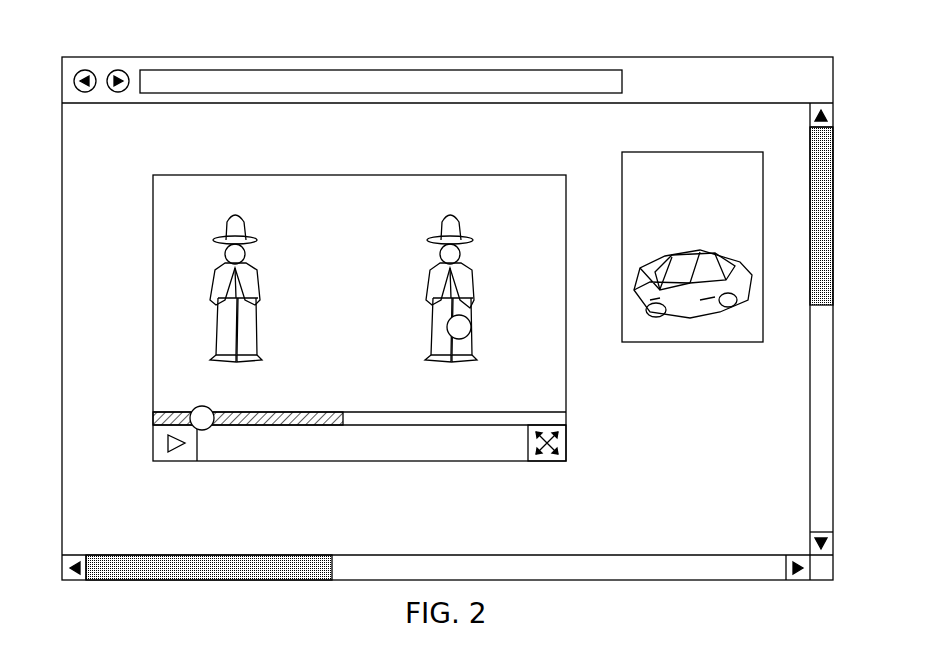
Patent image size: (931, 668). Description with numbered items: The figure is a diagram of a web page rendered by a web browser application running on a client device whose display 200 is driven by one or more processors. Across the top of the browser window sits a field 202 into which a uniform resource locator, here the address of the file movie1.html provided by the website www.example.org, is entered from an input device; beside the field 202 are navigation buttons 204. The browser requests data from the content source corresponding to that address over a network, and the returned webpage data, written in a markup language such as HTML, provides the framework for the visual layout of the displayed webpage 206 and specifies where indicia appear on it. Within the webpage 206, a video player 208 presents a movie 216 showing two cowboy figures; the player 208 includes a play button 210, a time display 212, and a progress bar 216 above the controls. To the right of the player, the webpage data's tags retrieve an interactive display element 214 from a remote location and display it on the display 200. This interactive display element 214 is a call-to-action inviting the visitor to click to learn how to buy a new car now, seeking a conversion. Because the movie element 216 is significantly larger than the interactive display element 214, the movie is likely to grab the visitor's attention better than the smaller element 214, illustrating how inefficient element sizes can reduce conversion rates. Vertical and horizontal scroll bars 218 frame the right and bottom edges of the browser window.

The display 200 is at (60, 192).
The field 202 is at (238, 69).
The navigation buttons 204 is at (85, 69).
The webpage 206 is at (78, 300).
The video player 208 is at (153, 195).
The play button 210 is at (188, 462).
The time display 212 is at (287, 462).
The interactive display element 214 is at (752, 164).
The movie 216 is at (348, 226).
The scroll bars 218 is at (836, 200).